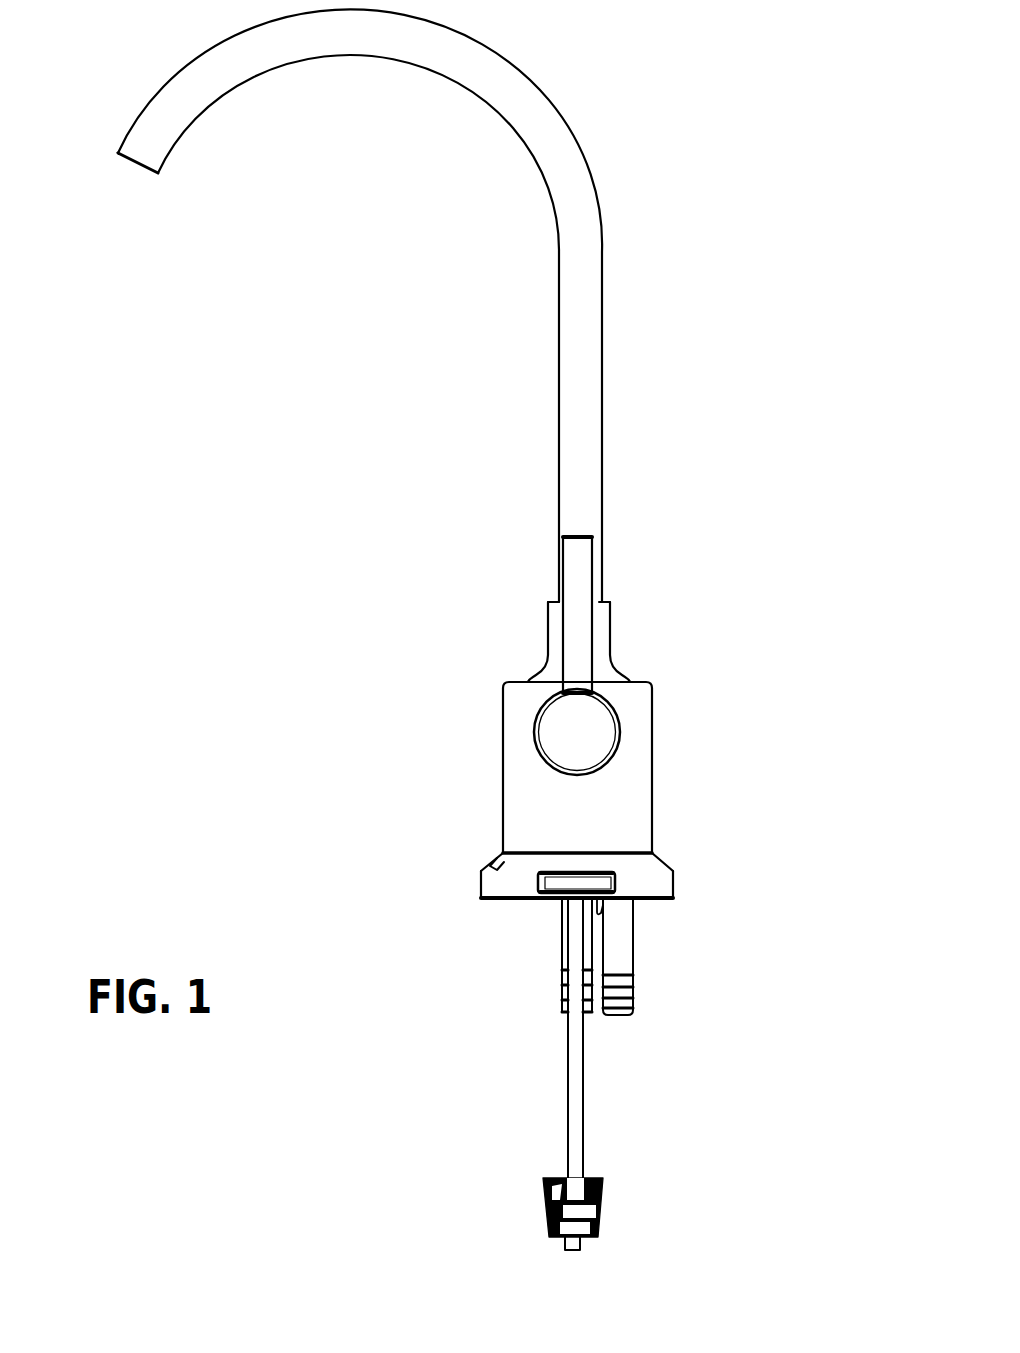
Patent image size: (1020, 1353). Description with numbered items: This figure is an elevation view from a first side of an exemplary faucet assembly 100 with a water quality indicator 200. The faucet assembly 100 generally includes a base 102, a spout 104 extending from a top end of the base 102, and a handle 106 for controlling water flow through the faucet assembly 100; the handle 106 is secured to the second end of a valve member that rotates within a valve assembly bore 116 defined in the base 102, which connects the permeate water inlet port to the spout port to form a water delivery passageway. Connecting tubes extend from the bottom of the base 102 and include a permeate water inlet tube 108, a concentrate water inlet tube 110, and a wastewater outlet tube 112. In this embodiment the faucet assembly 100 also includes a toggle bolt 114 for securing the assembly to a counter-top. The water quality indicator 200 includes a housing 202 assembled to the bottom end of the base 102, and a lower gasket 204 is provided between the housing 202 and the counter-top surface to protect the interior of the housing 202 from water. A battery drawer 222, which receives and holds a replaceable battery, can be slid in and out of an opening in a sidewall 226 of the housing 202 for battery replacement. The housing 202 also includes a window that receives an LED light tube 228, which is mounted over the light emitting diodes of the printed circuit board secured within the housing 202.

The faucet assembly 100 is at (787, 230).
The base 102 is at (648, 770).
The spout 104 is at (596, 358).
The handle 106 is at (582, 587).
The permeate water inlet tube 108 is at (562, 970).
The concentrate water inlet tube 110 is at (620, 957).
The wastewater outlet tube 112 is at (583, 930).
The toggle bolt 114 is at (573, 1120).
The valve assembly bore 116 is at (615, 712).
The water quality indicator 200 is at (700, 890).
The housing 202 is at (652, 854).
The lower gasket 204 is at (673, 899).
The battery drawer 222 is at (538, 893).
The sidewall 226 is at (490, 880).
The LED light tube 228 is at (492, 864).